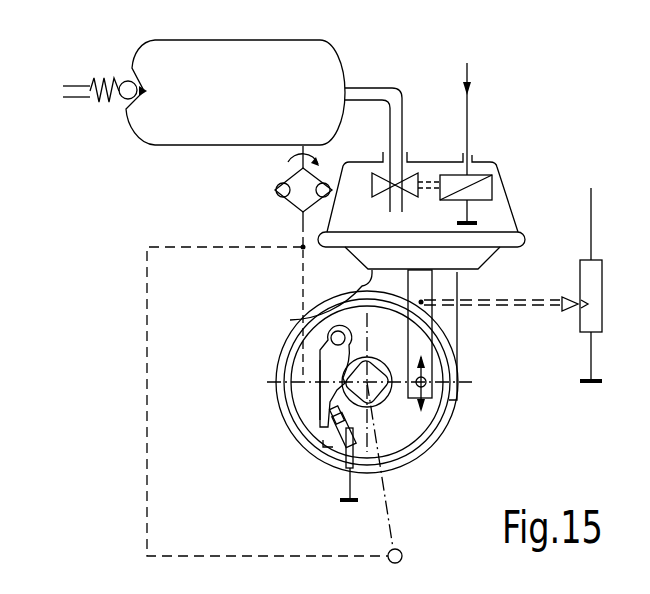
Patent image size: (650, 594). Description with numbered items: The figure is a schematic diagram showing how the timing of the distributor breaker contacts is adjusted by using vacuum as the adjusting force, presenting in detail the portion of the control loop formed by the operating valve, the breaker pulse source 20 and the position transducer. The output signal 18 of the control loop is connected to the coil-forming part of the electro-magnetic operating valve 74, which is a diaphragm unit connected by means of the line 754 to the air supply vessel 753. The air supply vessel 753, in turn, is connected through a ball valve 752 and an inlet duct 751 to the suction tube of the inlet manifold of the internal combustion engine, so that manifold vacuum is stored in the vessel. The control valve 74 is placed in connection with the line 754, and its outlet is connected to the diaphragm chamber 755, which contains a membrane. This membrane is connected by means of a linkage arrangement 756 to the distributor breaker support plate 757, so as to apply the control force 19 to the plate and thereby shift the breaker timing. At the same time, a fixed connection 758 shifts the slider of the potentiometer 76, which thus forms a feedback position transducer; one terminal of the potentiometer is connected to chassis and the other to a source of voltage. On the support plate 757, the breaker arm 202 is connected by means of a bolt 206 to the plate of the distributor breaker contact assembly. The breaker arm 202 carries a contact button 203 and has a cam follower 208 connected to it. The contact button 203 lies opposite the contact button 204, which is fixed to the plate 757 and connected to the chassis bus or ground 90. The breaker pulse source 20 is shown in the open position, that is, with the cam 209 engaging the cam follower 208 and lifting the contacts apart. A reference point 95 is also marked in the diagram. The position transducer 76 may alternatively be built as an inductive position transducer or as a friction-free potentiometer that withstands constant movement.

The inlet duct 751 is at (73, 92).
The ball valve 752 is at (117, 70).
The air supply vessel 753 is at (272, 52).
The line 754 is at (377, 97).
The electro-magnetic operating valve 74 is at (422, 171).
The output signal 18 is at (470, 92).
The diaphragm chamber 755 is at (500, 203).
The fixed connection 758 is at (494, 300).
The linkage arrangement 756 is at (422, 320).
The control force 19 is at (433, 368).
The potentiometer 76 is at (570, 318).
The ground 90 is at (351, 505).
The bolt 206 is at (330, 333).
The cam follower 208 is at (350, 330).
The breaker arm 202 is at (322, 400).
The breaker pulse source 20 is at (309, 414).
The contact button 203 is at (336, 436).
The contact button 204 is at (333, 441).
The distributor breaker support plate 757 is at (407, 457).
The cam 209 is at (378, 392).
The terminal 95 is at (402, 556).